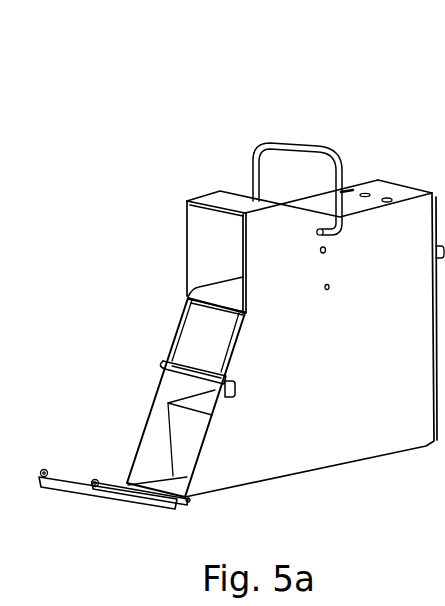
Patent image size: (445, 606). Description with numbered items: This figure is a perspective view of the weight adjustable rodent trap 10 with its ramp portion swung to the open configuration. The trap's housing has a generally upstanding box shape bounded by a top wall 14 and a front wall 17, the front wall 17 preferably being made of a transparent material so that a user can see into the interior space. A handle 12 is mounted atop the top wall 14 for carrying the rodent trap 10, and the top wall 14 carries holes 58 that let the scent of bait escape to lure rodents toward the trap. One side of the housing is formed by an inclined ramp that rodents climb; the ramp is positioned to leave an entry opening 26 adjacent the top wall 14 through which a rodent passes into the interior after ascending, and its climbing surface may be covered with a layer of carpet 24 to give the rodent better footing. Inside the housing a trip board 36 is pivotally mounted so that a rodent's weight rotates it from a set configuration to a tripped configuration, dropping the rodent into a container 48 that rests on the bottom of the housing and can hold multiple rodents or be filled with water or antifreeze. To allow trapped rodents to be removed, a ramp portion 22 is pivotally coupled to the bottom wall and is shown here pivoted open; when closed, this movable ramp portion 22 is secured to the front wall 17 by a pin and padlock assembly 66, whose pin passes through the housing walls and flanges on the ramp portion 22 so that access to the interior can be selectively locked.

The rodent trap 10 is at (191, 94).
The handle 12 is at (277, 141).
The top wall 14 is at (403, 196).
The front wall 17 is at (378, 391).
The ramp portion 22 is at (110, 488).
The carpet 24 is at (122, 504).
The entry opening 26 is at (199, 237).
The trip board 36 is at (218, 292).
The container 48 is at (188, 432).
The holes 58 is at (365, 192).
The pin and padlock assembly 66 is at (249, 377).